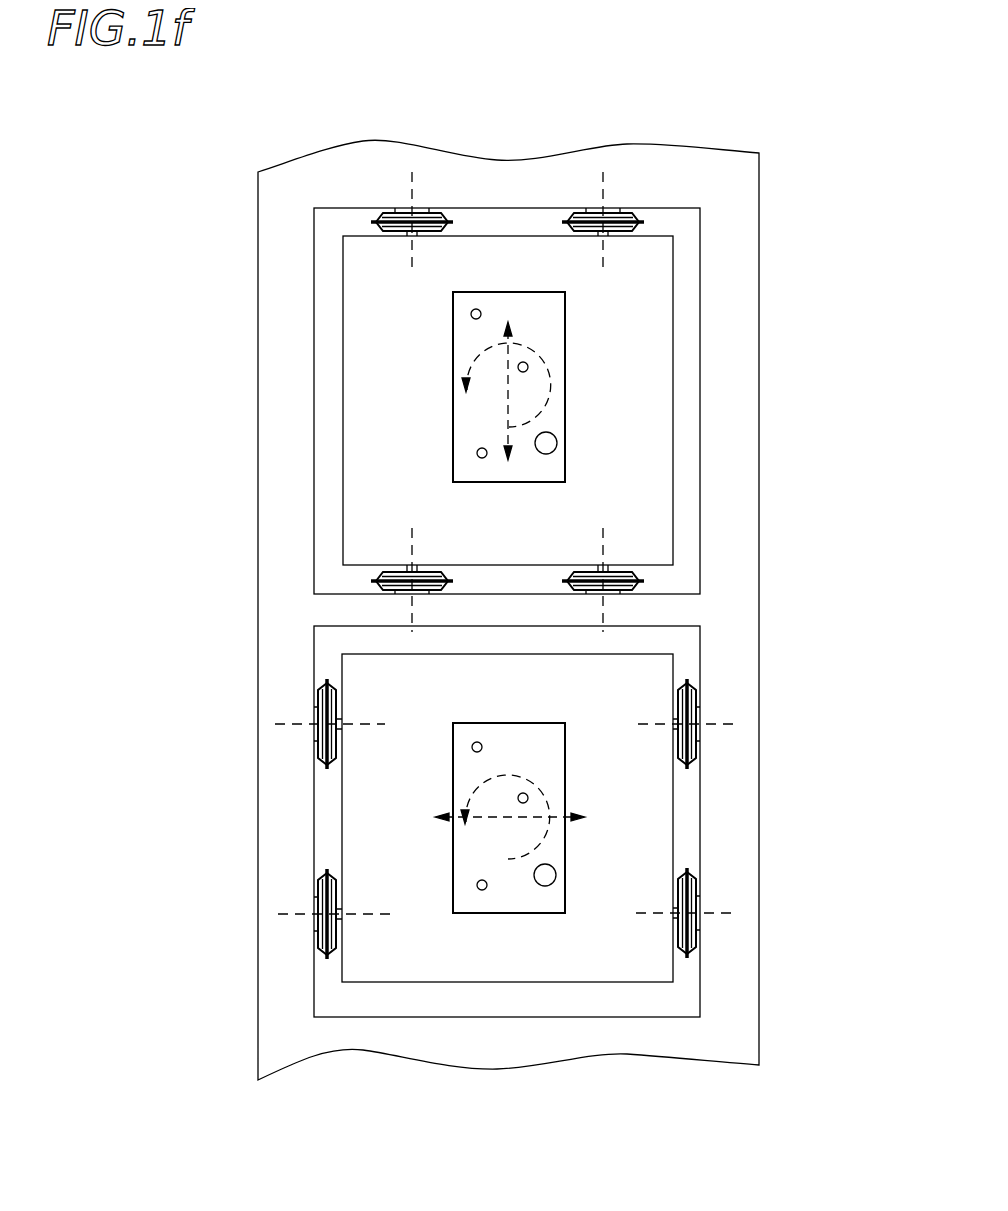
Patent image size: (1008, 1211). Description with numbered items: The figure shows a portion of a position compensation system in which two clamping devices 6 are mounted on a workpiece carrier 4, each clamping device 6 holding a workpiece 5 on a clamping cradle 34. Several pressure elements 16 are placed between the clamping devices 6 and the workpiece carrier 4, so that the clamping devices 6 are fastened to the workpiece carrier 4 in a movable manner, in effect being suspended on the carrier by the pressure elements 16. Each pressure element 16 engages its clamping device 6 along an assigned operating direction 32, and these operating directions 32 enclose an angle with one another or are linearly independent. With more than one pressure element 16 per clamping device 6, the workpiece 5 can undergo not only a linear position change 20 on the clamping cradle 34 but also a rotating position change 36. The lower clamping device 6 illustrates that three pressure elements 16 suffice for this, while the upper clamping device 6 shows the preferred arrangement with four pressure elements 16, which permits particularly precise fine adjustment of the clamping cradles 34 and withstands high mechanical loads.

The workpiece carrier 4 is at (303, 210).
The clamping device 6 is at (638, 293).
The clamping cradle 34 is at (645, 413).
The workpiece 5 is at (466, 336).
The rotating position change 36 is at (537, 353).
The linear position change 20 is at (507, 380).
The operating direction 32 is at (412, 182).
The pressure element 16 is at (436, 212).